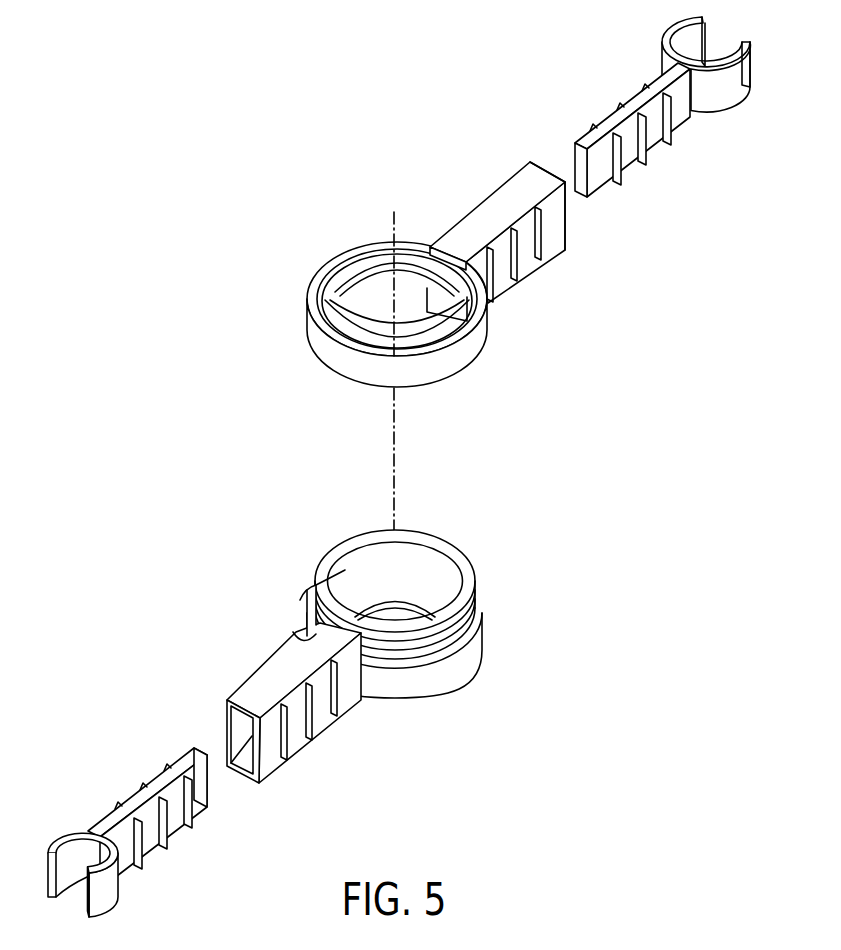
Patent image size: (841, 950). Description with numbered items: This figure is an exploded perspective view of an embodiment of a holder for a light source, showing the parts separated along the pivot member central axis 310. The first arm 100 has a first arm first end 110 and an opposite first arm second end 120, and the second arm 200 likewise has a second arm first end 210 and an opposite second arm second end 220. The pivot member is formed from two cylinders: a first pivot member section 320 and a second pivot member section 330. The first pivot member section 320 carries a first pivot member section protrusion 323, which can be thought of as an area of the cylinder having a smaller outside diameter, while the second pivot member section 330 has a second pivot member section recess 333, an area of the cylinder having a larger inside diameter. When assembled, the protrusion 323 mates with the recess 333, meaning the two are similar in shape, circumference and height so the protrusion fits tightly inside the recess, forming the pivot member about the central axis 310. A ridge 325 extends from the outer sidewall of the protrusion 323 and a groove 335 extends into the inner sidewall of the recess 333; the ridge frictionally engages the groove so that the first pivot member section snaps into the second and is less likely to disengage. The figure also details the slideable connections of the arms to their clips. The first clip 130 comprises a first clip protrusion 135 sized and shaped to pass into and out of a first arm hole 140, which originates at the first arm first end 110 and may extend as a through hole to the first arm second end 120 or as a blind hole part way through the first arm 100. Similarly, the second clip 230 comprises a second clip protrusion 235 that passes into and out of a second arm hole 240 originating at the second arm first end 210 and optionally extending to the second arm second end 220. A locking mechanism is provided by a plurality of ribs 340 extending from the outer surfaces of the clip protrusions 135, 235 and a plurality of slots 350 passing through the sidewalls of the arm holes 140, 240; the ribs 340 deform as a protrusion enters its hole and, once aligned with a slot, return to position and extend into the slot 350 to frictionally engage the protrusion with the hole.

The first arm 100 is at (262, 688).
The first arm first end 110 is at (226, 705).
The first arm second end 120 is at (294, 632).
The first clip 130 is at (125, 893).
The first clip protrusion 135 is at (136, 806).
The first arm hole 140 is at (225, 725).
The second arm 200 is at (495, 210).
The second arm first end 210 is at (545, 162).
The second arm second end 220 is at (456, 245).
The second clip 230 is at (757, 85).
The second clip protrusion 235 is at (638, 100).
The second arm hole 240 is at (580, 218).
The pivot member central axis 310 is at (401, 470).
The first pivot member section 320 is at (485, 658).
The first pivot member section protrusion 323 is at (457, 613).
The ridge 325 is at (413, 643).
The second pivot member section 330 is at (482, 347).
The second pivot member section recess 333 is at (345, 293).
The groove 335 is at (362, 268).
The ribs 340 is at (615, 179).
The slots 350 is at (490, 274).